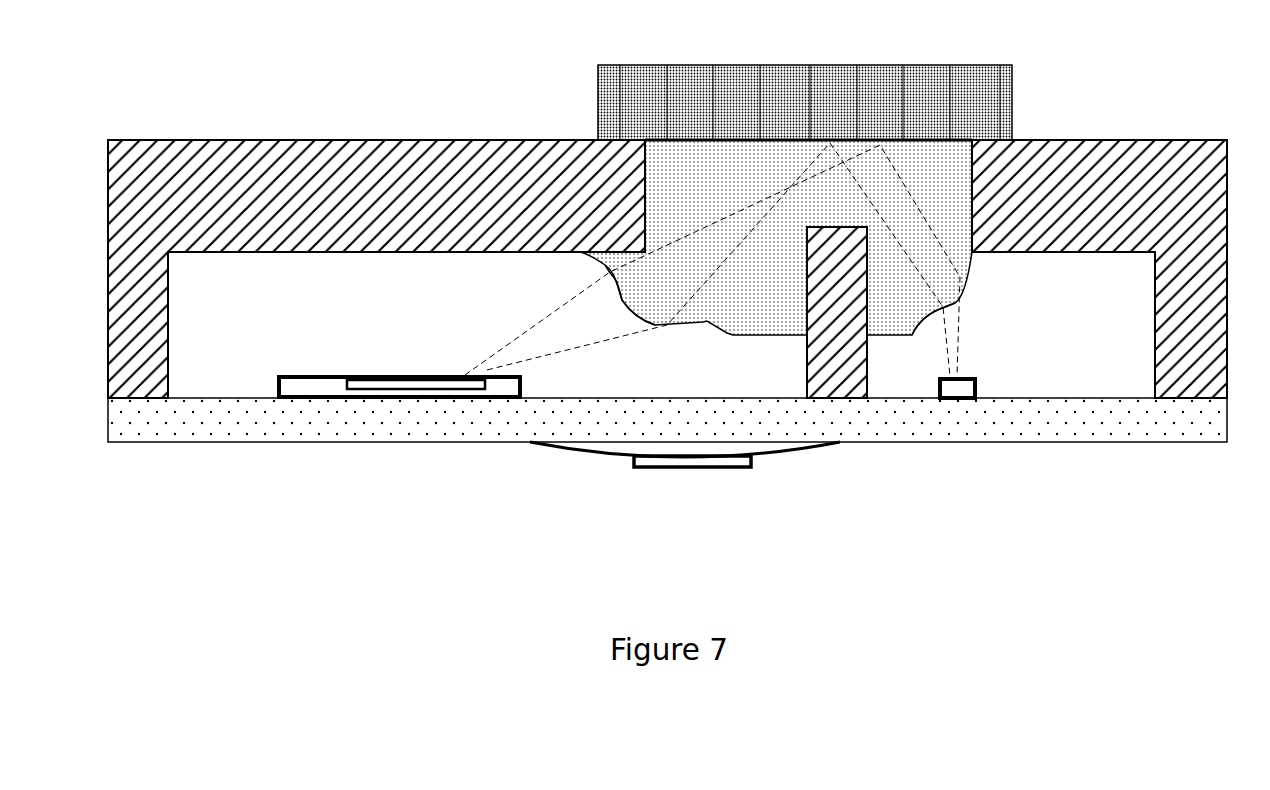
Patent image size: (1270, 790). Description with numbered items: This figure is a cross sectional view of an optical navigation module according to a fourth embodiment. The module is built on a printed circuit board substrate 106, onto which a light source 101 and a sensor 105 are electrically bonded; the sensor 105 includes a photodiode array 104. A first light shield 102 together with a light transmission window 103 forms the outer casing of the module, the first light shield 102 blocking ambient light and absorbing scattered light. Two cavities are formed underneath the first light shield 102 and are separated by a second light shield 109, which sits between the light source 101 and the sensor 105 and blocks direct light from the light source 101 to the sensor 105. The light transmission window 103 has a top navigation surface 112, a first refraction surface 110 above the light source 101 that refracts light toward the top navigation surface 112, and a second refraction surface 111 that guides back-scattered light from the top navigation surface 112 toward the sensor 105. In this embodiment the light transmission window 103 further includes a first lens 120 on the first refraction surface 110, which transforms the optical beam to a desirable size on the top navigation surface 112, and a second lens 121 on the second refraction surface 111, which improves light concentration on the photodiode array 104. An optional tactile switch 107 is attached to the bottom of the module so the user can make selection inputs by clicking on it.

The light source 101 is at (977, 398).
The first light shield 102 is at (447, 142).
The light transmission window 103 is at (780, 157).
The photodiode array 104 is at (372, 375).
The sensor 105 is at (312, 383).
The printed circuit board substrate 106 is at (490, 415).
The tactile switch 107 is at (750, 468).
The second light shield 109 is at (843, 243).
The first refraction surface 110 is at (913, 327).
The second refraction surface 111 is at (591, 133).
The top navigation surface 112 is at (828, 142).
The first lens 120 is at (1030, 138).
The second lens 121 is at (632, 308).